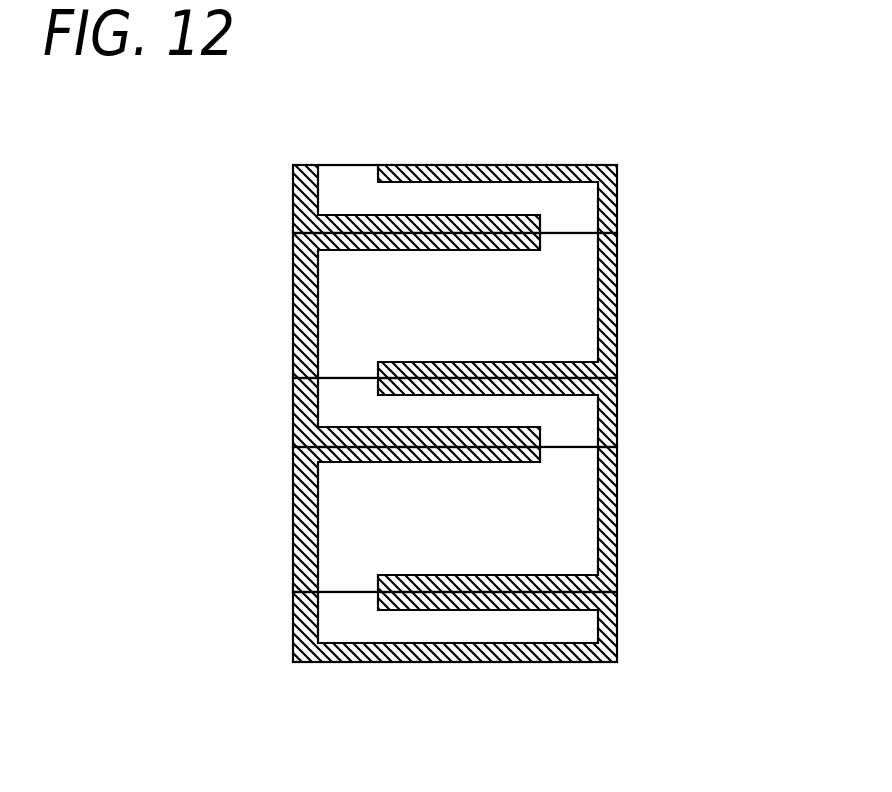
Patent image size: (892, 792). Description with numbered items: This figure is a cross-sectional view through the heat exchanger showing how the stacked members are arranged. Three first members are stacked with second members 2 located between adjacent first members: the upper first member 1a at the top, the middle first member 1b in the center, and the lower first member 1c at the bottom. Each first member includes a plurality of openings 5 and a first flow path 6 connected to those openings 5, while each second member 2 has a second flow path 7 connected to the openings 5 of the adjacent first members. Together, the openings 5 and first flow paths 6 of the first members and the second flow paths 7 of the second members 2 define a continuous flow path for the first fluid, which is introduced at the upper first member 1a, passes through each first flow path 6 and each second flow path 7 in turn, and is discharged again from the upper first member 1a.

The upper first member 1a is at (302, 190).
The middle first member 1b is at (303, 415).
The lower first member 1c is at (308, 613).
The second member 2 is at (315, 290).
The opening 5 is at (562, 225).
The first flow path 6 is at (492, 415).
The second flow path 7 is at (492, 348).